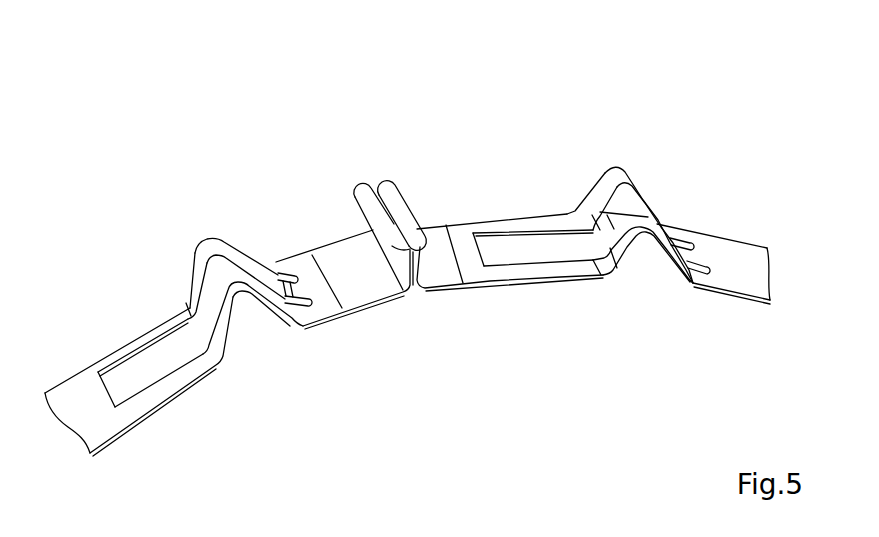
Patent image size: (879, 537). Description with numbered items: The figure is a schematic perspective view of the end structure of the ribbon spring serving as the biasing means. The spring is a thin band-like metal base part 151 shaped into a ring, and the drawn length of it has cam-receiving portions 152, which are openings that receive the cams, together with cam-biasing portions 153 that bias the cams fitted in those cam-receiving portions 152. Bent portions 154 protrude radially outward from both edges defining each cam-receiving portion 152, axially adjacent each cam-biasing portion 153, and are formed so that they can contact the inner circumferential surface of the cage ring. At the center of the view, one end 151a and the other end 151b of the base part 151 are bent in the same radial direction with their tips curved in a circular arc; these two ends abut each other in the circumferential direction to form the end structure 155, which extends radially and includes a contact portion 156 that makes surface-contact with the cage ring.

The base part 151 is at (737, 288).
The one end 151a is at (358, 192).
The other end 151b is at (388, 187).
The cam-receiving portion 152 is at (140, 363).
The cam-biasing portion 153 is at (227, 242).
The bent portion 154 is at (198, 242).
The end structure 155 is at (348, 173).
The contact portion 156 is at (371, 183).